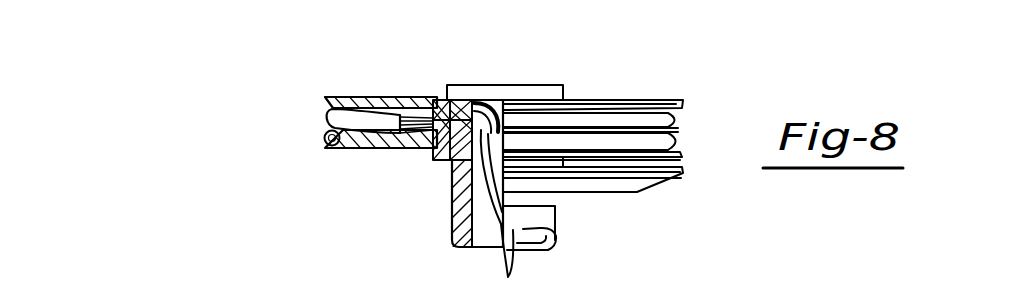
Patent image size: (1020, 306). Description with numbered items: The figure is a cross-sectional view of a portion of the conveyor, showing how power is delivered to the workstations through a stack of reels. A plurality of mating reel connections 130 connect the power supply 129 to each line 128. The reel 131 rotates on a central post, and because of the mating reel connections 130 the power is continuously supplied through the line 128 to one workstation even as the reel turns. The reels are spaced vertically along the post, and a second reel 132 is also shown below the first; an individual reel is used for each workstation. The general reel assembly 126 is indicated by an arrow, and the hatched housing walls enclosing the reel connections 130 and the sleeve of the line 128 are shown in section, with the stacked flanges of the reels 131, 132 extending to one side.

The finned connector body 126 is at (702, 105).
The line 128 is at (328, 110).
The power supply 129 is at (497, 183).
The mating reel connections 130 is at (420, 148).
The reel 131 is at (372, 97).
The second reel 132 is at (683, 173).